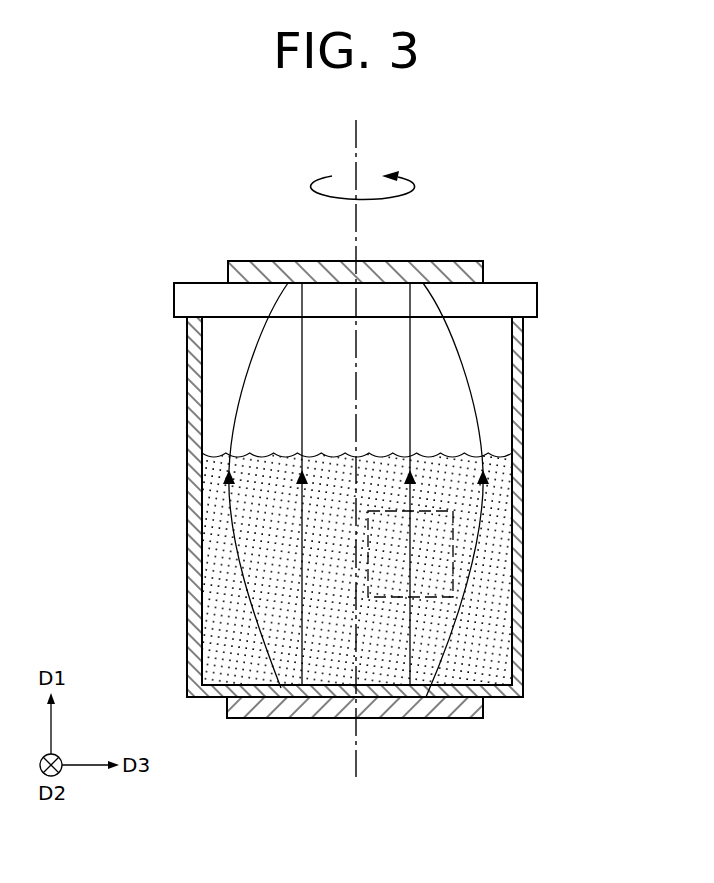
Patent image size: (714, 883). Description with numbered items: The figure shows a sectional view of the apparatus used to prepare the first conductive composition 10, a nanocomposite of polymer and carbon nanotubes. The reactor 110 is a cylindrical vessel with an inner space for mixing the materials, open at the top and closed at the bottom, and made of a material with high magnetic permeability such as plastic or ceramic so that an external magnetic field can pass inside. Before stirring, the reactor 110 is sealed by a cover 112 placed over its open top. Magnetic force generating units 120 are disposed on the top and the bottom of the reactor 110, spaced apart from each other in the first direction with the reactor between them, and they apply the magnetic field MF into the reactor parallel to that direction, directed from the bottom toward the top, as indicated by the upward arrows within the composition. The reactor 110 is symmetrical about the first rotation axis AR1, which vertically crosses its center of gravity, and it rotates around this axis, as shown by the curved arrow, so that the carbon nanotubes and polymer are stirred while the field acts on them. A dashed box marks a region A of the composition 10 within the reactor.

The first conductive composition 10 is at (497, 650).
The reactor 110 is at (517, 432).
The cover 112 is at (525, 302).
The magnetic force generating units 120 is at (475, 272).
The first rotation axis AR1 is at (357, 134).
The region A is at (391, 597).
The magnetic field MF is at (408, 677).